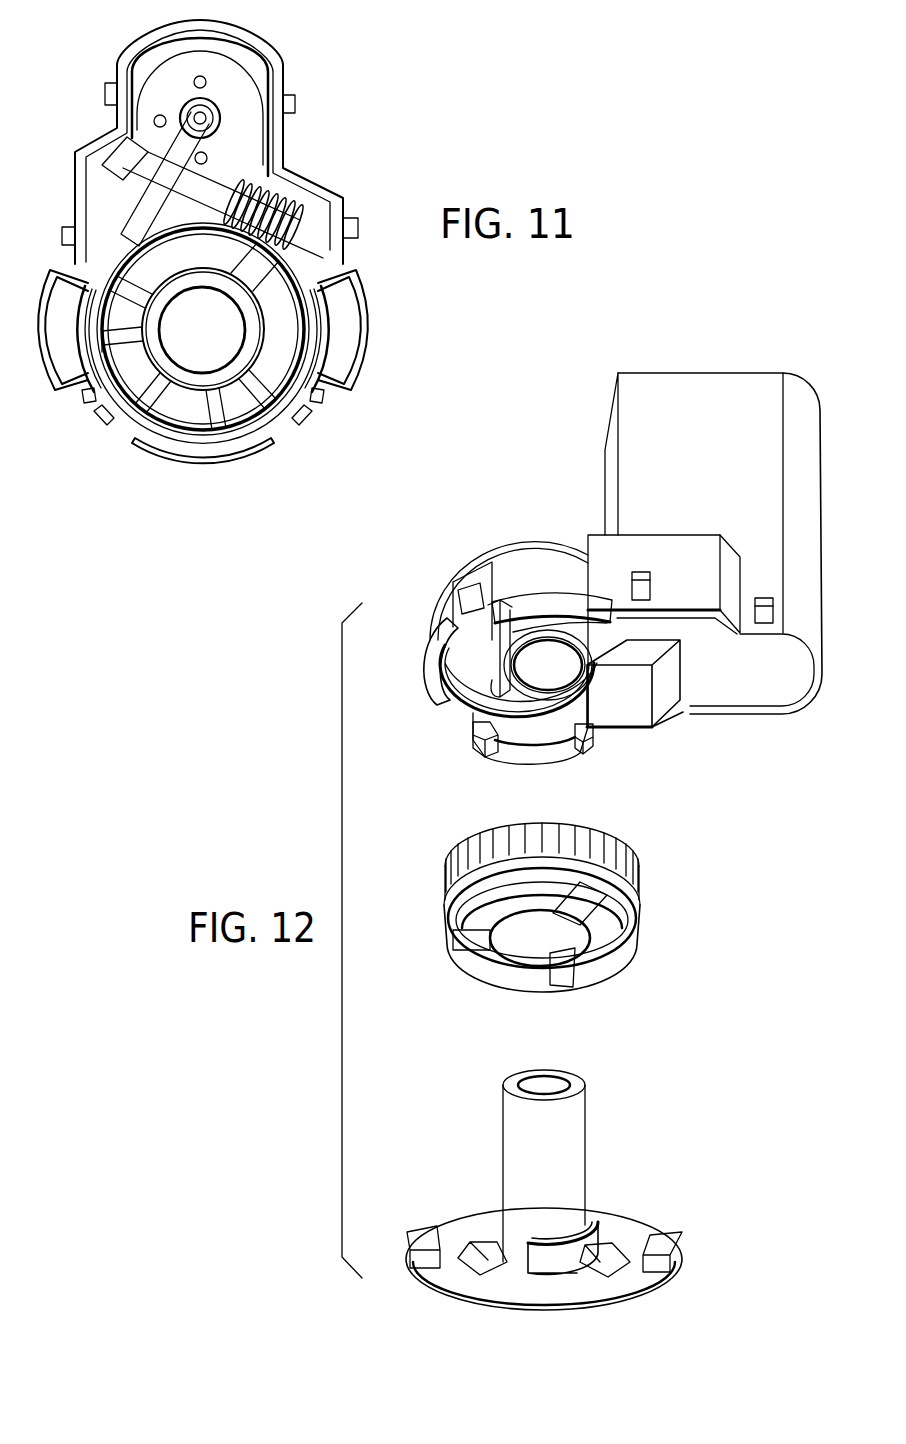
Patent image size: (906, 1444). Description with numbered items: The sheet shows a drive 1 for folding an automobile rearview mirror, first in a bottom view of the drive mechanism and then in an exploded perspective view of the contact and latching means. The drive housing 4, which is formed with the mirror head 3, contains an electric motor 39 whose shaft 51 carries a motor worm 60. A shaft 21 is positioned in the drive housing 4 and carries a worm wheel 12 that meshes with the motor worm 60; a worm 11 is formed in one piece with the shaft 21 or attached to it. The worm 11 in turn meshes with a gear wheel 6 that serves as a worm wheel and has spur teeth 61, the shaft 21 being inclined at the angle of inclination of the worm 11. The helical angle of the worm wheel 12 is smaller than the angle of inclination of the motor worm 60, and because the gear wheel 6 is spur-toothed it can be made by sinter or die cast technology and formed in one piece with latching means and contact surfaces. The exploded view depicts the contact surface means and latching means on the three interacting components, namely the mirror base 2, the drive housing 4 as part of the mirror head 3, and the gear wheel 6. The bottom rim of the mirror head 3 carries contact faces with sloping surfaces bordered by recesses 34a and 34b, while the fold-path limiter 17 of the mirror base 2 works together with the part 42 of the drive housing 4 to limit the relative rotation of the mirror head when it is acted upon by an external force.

In FIG. 11, the drive 1 is at (328, 68).
In FIG. 12, the mirror base 2 is at (625, 1285).
In FIG. 12, the mirror head 3 is at (627, 700).
In FIG. 11, the drive housing 4 is at (75, 200).
In FIG. 12, the drive housing 4 is at (703, 553).
In FIG. 11, the gear wheel 6 is at (147, 395).
In FIG. 12, the gear wheel 6 is at (613, 940).
In FIG. 11, the worm 11 is at (295, 200).
In FIG. 11, the worm wheel 12 is at (152, 190).
In FIG. 12, the fold-path limiter 17 is at (553, 1252).
In FIG. 11, the shaft 21 is at (205, 192).
In FIG. 12, the recess 34a is at (470, 742).
In FIG. 12, the recess 34b is at (587, 745).
In FIG. 11, the electric motor 39 is at (255, 95).
In FIG. 12, the part of the drive housing 42 is at (470, 648).
In FIG. 11, the shaft of the motor 51 is at (207, 120).
In FIG. 11, the motor worm 60 is at (190, 104).
In FIG. 11, the spur teeth 61 is at (303, 303).